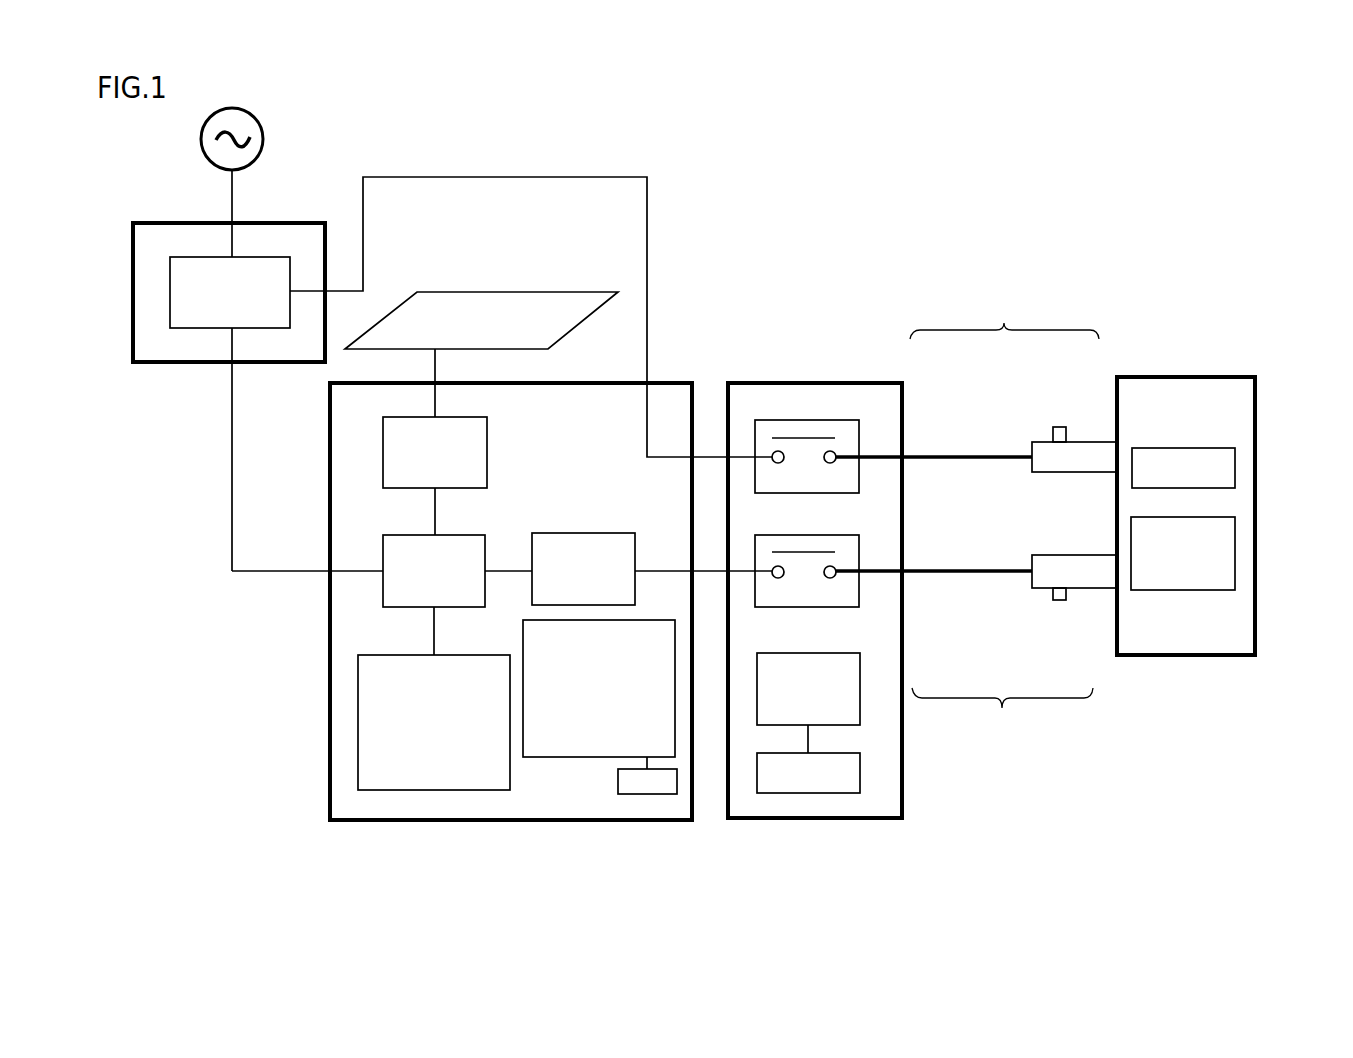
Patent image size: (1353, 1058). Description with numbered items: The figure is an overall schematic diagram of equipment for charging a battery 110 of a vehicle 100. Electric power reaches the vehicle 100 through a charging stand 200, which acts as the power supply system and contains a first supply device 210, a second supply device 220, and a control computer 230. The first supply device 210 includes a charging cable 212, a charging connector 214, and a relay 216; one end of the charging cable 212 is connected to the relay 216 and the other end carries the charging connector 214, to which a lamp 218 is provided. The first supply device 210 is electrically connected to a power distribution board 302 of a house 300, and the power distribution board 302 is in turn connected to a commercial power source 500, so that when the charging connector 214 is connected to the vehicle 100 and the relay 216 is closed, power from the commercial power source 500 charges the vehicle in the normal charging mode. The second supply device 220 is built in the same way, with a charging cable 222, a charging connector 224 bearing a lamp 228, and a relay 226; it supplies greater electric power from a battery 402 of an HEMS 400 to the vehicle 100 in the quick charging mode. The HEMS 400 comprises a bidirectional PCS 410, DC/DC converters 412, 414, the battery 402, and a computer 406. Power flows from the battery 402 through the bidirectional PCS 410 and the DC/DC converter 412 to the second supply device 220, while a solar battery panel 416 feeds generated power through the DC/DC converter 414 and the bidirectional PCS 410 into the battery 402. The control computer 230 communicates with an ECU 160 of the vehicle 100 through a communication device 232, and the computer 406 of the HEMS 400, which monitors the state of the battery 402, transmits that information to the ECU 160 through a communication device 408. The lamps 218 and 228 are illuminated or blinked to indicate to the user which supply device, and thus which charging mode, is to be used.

The vehicle 100 is at (1195, 377).
The battery 110 is at (1235, 527).
The ECU 160 is at (1235, 472).
The charging stand 200 is at (750, 383).
The first supply device 210 is at (1004, 317).
The charging cable 212 is at (970, 457).
The charging connector 214 is at (1040, 442).
The relay 216 is at (859, 440).
The lamp 218 is at (1060, 427).
The second supply device 220 is at (1002, 713).
The charging cable 222 is at (970, 571).
The charging connector 224 is at (1035, 588).
The relay 226 is at (859, 592).
The lamp 228 is at (1060, 600).
The control computer 230 is at (860, 715).
The communication device 232 is at (860, 770).
The house 300 is at (283, 222).
The power distribution board 302 is at (192, 328).
The HEMS 400 is at (672, 382).
The battery 402 is at (358, 720).
The computer 406 is at (560, 757).
The communication device 408 is at (655, 794).
The bidirectional PCS 410 is at (383, 548).
The DC/DC converter 412 is at (587, 533).
The DC/DC converter 414 is at (383, 447).
The solar battery panel 416 is at (450, 290).
The commercial power source 500 is at (261, 155).